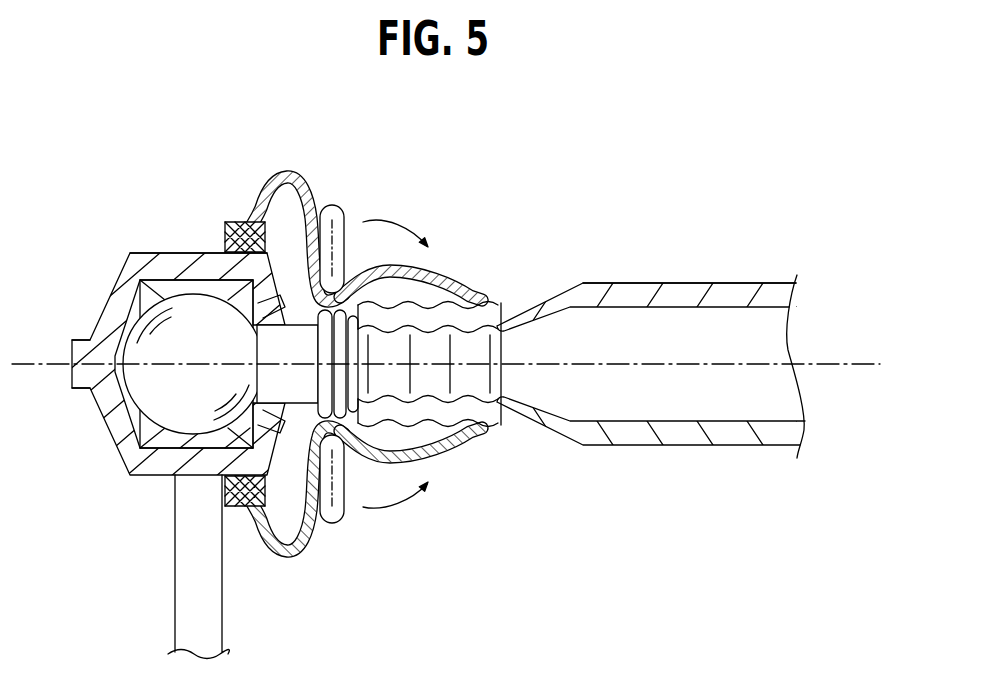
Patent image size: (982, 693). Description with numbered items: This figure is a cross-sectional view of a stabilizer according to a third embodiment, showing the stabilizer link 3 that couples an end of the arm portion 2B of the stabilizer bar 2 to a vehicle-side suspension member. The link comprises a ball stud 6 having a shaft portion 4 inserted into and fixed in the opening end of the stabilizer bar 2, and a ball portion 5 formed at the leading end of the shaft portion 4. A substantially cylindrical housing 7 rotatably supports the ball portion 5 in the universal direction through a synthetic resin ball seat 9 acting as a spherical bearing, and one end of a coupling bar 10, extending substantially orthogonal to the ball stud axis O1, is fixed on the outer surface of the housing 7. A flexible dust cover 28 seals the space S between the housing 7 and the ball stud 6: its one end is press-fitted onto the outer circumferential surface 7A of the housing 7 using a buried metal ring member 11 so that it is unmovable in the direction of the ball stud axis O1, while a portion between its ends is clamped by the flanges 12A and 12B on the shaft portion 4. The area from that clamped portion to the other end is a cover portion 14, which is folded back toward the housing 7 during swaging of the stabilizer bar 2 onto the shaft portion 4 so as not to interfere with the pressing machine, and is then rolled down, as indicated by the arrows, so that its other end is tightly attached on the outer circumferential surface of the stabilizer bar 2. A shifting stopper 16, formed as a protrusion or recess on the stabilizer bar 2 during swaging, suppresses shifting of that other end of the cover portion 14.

The stabilizer bar 2 is at (657, 276).
The arm portion 2B is at (708, 300).
The stabilizer link 3 is at (104, 270).
The shaft portion 4 is at (481, 334).
The ball portion 5 is at (152, 382).
The ball stud 6 is at (298, 412).
The housing 7 is at (120, 438).
The outer circumferential surface 7A is at (187, 253).
The ball seat 9 is at (163, 290).
The coupling bar 10 is at (187, 578).
The ring member 11 is at (233, 222).
The flange 12A is at (322, 525).
The flange 12B is at (358, 503).
The cover portion 14 is at (443, 275).
The shifting stopper 16 is at (443, 450).
The dust cover 28 is at (293, 171).
The space S is at (272, 322).
The ball stud axis O1 is at (842, 350).